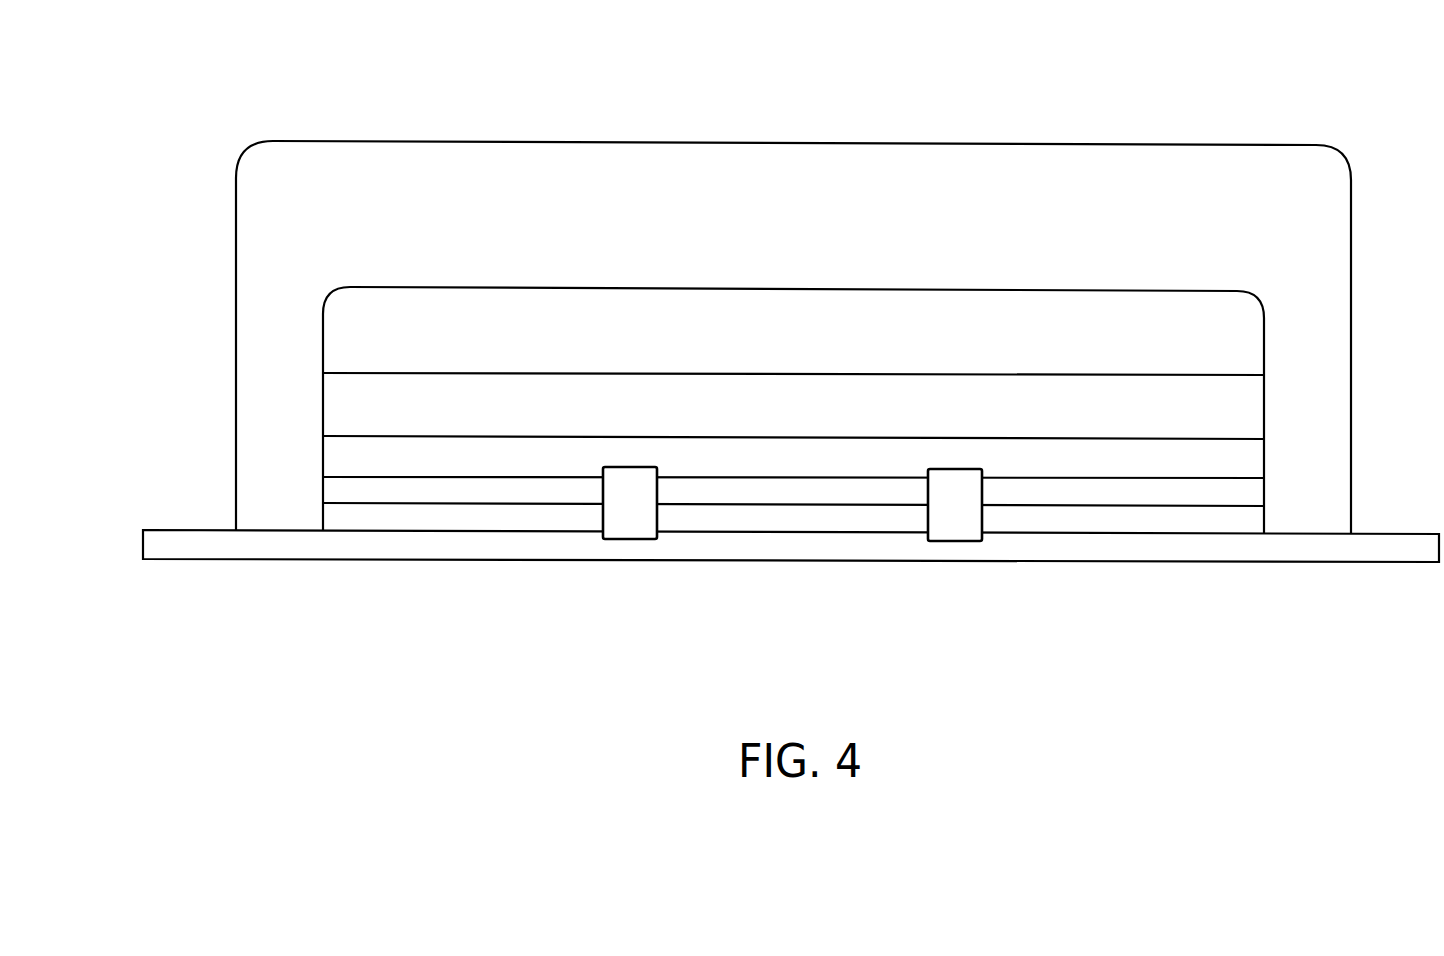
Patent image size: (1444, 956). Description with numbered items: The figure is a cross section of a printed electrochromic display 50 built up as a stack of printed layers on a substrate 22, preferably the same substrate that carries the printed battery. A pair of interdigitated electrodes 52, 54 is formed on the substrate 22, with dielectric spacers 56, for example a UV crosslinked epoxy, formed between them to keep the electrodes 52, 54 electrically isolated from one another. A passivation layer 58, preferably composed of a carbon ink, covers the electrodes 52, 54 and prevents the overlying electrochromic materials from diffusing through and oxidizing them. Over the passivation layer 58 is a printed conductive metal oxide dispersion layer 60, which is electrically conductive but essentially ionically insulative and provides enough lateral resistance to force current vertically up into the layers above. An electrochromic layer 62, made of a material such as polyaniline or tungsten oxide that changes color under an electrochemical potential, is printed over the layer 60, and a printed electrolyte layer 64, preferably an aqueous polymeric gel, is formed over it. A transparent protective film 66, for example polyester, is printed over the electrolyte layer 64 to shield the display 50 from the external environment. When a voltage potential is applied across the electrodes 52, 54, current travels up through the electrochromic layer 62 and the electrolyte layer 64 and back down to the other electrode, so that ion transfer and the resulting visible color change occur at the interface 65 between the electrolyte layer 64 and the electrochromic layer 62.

The substrate 22 is at (204, 543).
The printed electrochromic display 50 is at (1169, 104).
The interdigitated electrode 52 is at (398, 514).
The interdigitated electrode 54 is at (727, 519).
The dielectric spacers 56 is at (630, 511).
The passivation layer 58 is at (355, 490).
The conductive metal oxide dispersion layer 60 is at (806, 456).
The electrochromic layer 62 is at (368, 412).
The electrolyte layer 64 is at (512, 310).
The interface 65 is at (370, 373).
The transparent protective film 66 is at (505, 158).